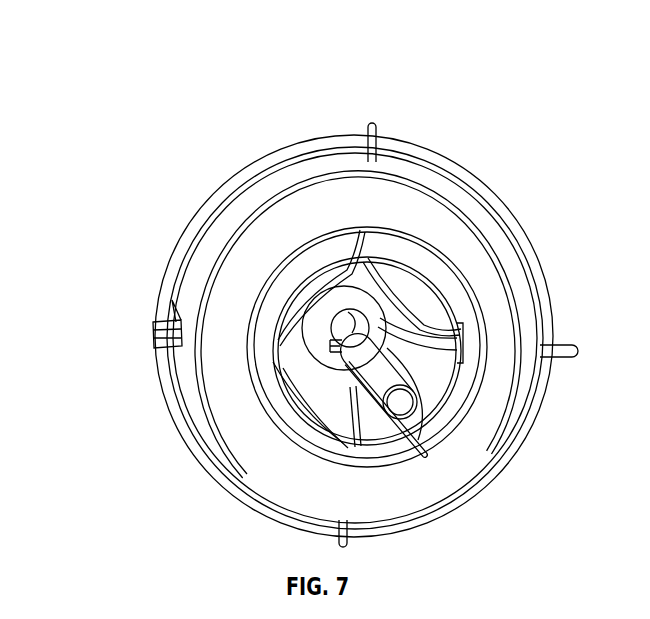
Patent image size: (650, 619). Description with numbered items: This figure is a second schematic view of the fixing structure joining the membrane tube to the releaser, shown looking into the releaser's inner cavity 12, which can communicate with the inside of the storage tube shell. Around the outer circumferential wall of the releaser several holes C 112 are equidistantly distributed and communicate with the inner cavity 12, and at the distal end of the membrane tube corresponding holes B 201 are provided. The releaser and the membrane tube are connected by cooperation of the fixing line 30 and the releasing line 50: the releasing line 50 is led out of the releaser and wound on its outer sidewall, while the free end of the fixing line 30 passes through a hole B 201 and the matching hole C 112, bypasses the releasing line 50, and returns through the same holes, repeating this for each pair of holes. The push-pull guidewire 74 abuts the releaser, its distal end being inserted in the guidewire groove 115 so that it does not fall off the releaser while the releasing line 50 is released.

The fixing line 30 is at (373, 124).
The releasing line 50 is at (196, 238).
The inner cavity 12 is at (303, 271).
The push-pull guidewire 74 is at (400, 367).
The hole C 112 is at (178, 338).
The hole B 201 is at (250, 348).
The guidewire groove 115 is at (347, 370).